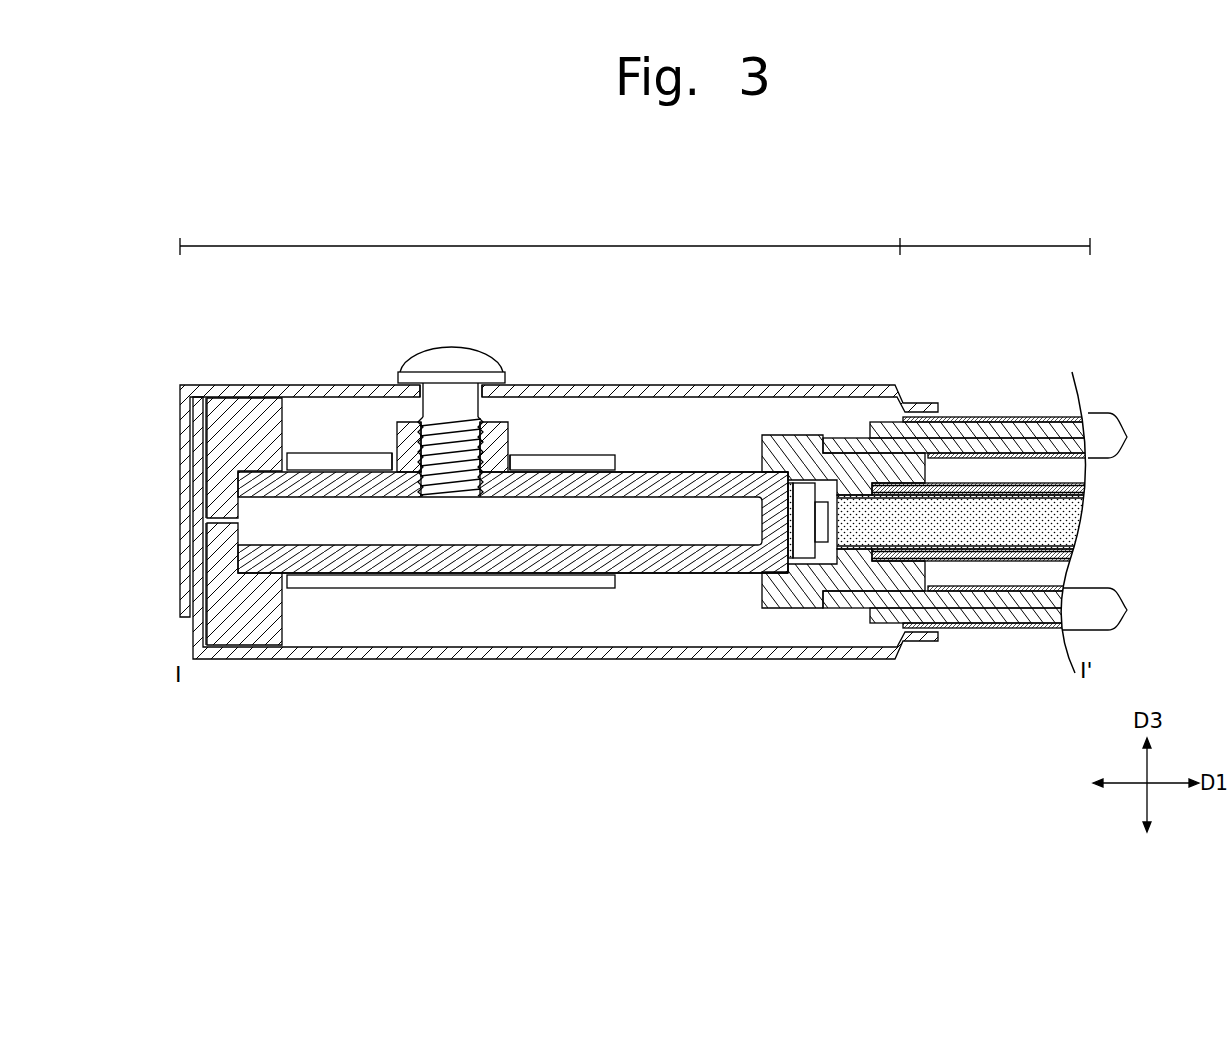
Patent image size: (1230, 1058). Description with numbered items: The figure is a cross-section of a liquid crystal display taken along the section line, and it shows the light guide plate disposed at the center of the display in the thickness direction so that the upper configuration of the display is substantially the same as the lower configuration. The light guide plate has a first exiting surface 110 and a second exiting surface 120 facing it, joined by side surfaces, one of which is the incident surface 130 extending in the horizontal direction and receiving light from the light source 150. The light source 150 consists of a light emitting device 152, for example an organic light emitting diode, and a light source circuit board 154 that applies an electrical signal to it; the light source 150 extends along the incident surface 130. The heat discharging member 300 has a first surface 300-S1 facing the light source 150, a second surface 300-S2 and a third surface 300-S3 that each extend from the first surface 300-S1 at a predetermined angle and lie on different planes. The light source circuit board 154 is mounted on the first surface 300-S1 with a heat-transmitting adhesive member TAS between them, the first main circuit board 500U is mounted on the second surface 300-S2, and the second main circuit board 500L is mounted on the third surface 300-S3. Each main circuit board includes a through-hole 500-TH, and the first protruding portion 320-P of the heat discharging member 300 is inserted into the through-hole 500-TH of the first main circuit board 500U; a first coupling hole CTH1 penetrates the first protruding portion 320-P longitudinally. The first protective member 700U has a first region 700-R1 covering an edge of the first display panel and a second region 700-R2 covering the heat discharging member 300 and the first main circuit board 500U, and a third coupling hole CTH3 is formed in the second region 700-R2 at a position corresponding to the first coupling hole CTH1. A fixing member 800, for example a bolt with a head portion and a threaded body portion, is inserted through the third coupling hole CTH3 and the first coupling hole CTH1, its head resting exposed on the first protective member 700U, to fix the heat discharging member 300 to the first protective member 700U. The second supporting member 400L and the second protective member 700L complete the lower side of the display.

The first exiting surface 110 is at (1070, 505).
The second exiting surface 120 is at (1053, 538).
The incident surface 130 is at (830, 560).
The light source 150 is at (856, 419).
The light emitting device 152 is at (822, 515).
The light source circuit board 154 is at (805, 492).
The heat discharging member 300 is at (357, 565).
The first surface 300-S1 is at (790, 567).
The second surface 300-S2 is at (670, 472).
The third surface 300-S3 is at (673, 572).
The first protruding portion 320-P is at (502, 420).
The second supporting member 400L is at (228, 400).
The first main circuit board 500U is at (320, 460).
The second main circuit board 500L is at (432, 585).
The through-hole 500-TH is at (397, 440).
The first protective member 700U is at (720, 385).
The second protective member 700L is at (550, 655).
The first region 700-R1 is at (995, 238).
The second region 700-R2 is at (540, 238).
The fixing member 800 is at (453, 350).
The first coupling hole CTH1 is at (432, 445).
The third coupling hole CTH3 is at (473, 383).
The heat-transmitting adhesive member TAS is at (790, 492).